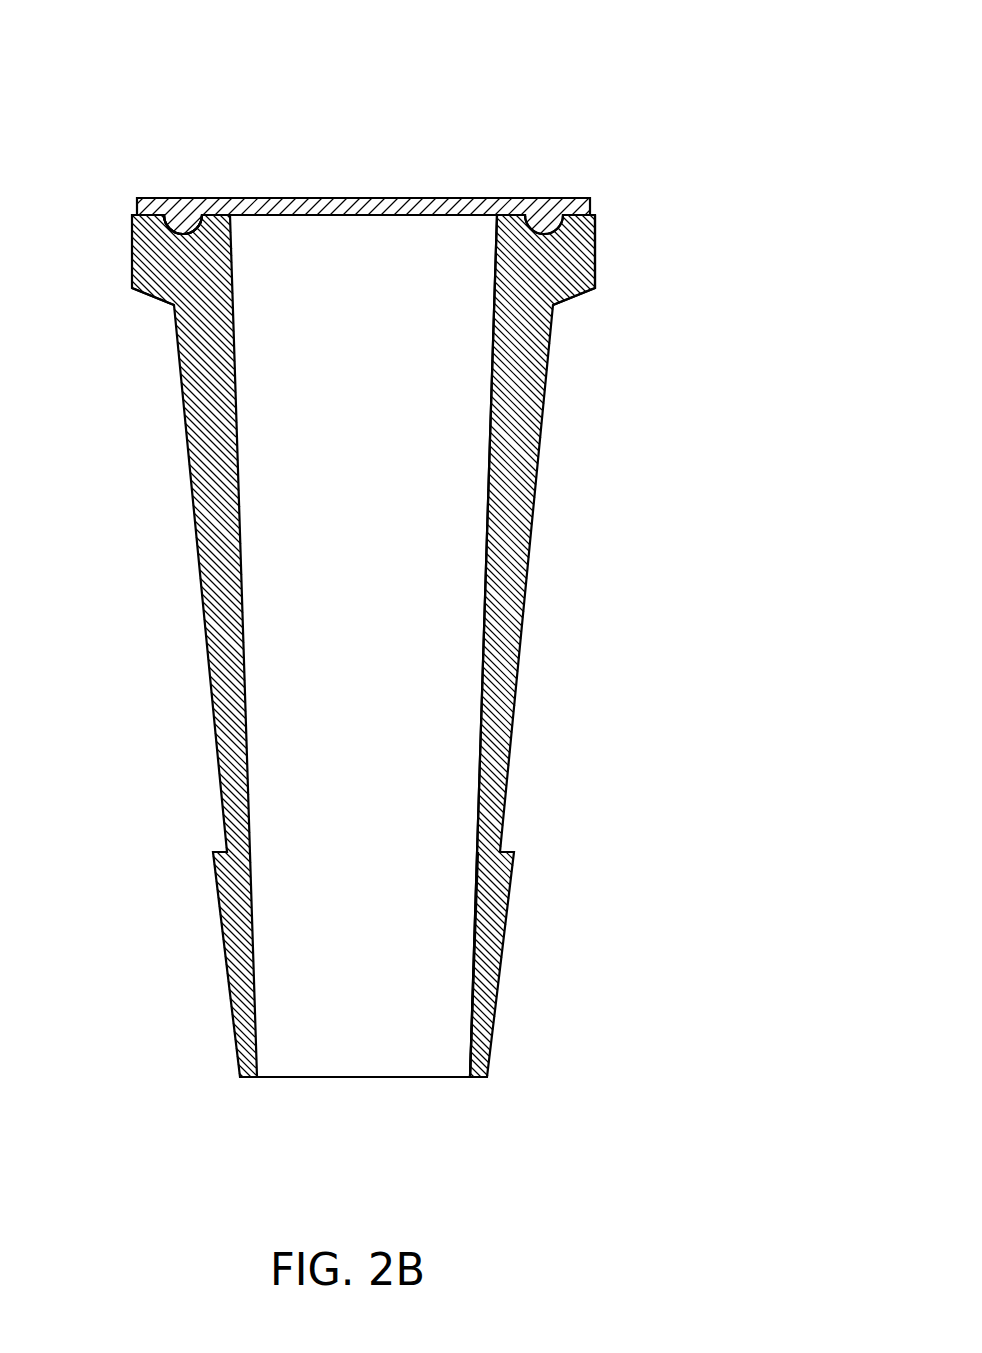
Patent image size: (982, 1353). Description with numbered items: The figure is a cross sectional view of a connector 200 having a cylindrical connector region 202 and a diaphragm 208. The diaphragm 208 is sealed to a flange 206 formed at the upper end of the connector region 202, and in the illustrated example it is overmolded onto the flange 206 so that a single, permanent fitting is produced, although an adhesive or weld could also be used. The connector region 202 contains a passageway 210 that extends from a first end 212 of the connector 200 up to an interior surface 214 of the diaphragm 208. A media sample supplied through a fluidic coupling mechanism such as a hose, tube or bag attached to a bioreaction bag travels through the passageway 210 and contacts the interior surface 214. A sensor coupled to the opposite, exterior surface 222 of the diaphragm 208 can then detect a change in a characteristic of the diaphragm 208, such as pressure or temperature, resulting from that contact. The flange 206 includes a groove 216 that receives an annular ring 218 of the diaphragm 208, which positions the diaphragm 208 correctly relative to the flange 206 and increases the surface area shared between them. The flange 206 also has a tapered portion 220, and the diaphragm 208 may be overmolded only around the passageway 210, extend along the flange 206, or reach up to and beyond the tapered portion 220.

The connector 200 is at (397, 579).
The connector region 202 is at (518, 641).
The flange 206 is at (594, 275).
The diaphragm 208 is at (557, 197).
The passageway 210 is at (473, 1027).
The first end 212 is at (298, 1077).
The interior surface 214 is at (460, 216).
The groove 216 is at (183, 234).
The annular ring 218 is at (183, 233).
The tapered portion 220 is at (171, 303).
The exterior surface 222 is at (352, 197).